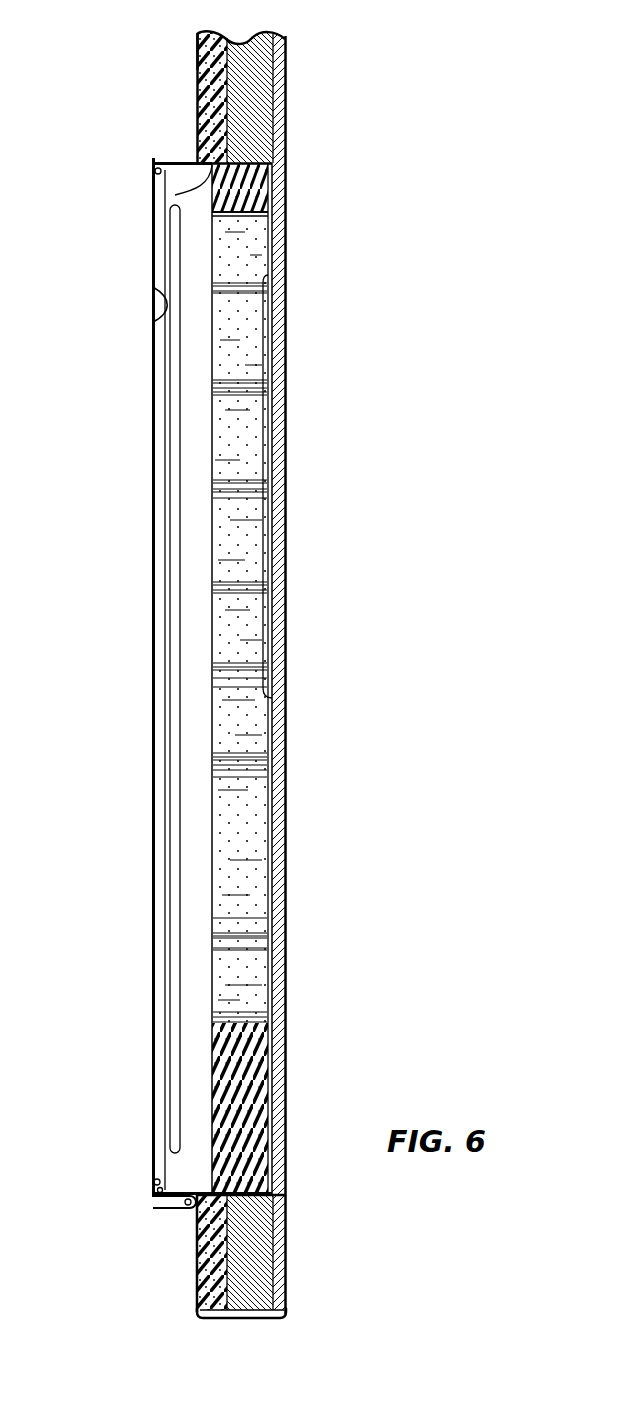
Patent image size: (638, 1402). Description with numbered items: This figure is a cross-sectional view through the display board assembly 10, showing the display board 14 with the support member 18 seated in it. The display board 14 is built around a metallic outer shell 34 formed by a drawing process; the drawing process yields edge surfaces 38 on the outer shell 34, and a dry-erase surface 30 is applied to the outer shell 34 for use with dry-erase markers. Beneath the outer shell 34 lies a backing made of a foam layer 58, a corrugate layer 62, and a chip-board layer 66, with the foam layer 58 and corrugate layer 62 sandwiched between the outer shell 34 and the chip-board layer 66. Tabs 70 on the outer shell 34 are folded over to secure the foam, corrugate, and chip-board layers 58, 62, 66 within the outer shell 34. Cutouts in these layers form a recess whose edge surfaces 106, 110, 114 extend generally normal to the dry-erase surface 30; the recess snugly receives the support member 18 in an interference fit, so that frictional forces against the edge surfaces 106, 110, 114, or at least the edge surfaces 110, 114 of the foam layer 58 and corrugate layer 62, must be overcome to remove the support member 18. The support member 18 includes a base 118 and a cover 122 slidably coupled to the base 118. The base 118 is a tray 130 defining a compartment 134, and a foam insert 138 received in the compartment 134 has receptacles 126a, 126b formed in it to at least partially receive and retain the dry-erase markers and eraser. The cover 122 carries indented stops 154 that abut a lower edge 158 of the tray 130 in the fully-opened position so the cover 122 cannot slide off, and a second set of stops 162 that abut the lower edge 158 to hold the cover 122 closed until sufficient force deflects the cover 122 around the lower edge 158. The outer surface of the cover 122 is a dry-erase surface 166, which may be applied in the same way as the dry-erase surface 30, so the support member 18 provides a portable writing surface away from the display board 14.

The display board assembly 10 is at (350, 112).
The display board 14 is at (184, 92).
The support member 18 is at (128, 246).
The dry-erase surface 30 is at (198, 62).
The outer shell 34 is at (197, 113).
The edge surfaces 38 is at (213, 1318).
The foam layer 58 is at (210, 33).
The corrugate layer 62 is at (248, 50).
The chip-board layer 66 is at (280, 38).
The tabs 70 is at (287, 1260).
The edge surface 106 is at (156, 176).
The edge surface 110 is at (175, 195).
The edge surface 114 is at (262, 194).
The base 118 is at (287, 232).
The cover 122 is at (162, 1210).
The receptacle 126a is at (243, 325).
The receptacle 126b is at (243, 852).
The tray 130 is at (178, 1192).
The compartment 134 is at (198, 969).
The foam insert 138 is at (245, 1097).
The stops 154 is at (155, 302).
The lower edge 158 is at (156, 1207).
The stops 162 is at (155, 1182).
The dry-erase surface 166 is at (150, 472).